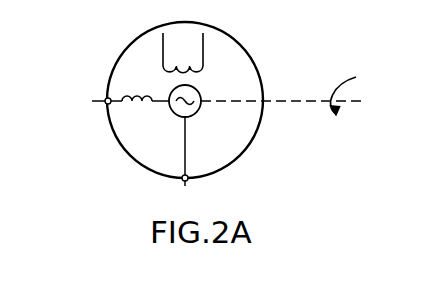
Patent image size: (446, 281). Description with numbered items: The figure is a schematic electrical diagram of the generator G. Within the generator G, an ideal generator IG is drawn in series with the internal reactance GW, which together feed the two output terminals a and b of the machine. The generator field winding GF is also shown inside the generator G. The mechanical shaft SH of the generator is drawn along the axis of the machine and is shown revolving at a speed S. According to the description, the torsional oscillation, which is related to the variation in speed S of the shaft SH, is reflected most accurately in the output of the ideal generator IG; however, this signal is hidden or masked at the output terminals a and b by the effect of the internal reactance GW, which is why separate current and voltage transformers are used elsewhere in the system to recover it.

The generator G is at (231, 132).
The shaft SH is at (305, 100).
The speed S is at (354, 75).
The ideal generator IG is at (198, 90).
The internal reactance GW is at (153, 104).
The generator field winding GF is at (188, 62).
The output terminal a is at (106, 98).
The output terminal b is at (188, 180).